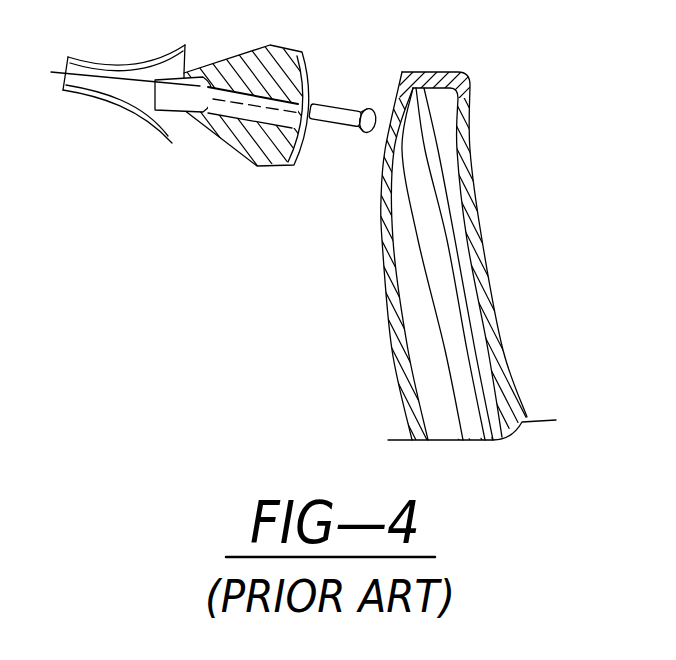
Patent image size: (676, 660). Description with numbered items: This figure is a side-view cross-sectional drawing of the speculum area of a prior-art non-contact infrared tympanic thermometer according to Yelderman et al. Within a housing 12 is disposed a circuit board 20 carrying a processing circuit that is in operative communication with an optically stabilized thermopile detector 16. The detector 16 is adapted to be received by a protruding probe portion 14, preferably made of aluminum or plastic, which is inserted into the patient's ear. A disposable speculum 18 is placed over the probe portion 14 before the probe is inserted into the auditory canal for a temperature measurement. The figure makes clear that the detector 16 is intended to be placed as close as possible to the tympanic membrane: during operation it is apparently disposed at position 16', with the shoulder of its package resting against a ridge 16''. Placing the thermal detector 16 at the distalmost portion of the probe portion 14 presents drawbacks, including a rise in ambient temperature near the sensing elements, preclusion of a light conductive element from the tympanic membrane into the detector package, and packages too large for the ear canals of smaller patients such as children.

The housing 12 is at (468, 88).
The protruding probe portion 14 is at (233, 140).
The optically stabilized thermopile detector 16 is at (343, 67).
The detector position 16' is at (170, 56).
The ridge 16'' is at (243, 64).
The disposable speculum 18 is at (138, 118).
The circuit board 20 is at (430, 167).